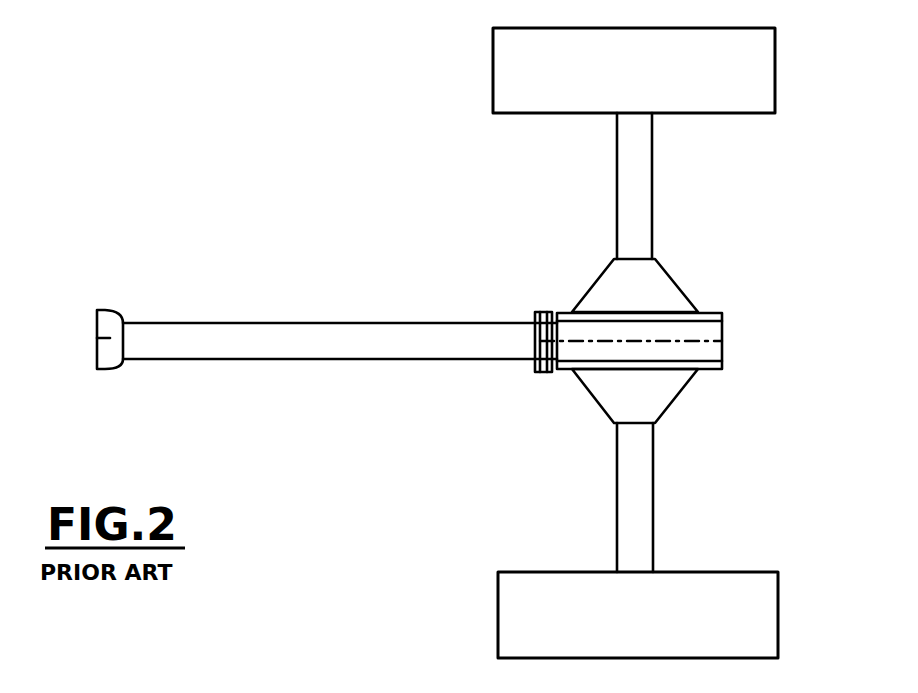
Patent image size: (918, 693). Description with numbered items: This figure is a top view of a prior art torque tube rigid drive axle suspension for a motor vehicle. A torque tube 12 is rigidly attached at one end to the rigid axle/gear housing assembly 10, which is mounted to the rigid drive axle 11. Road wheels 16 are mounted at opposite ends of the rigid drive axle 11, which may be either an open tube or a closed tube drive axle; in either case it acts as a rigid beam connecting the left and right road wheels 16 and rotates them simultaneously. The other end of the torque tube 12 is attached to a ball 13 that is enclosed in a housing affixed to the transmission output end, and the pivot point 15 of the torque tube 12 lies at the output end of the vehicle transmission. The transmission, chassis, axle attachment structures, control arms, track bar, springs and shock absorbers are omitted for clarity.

The rigid drive axle/gear housing assembly 10 is at (722, 340).
The rigid drive axle 11 is at (652, 180).
The torque tube 12 is at (335, 363).
The ball 13 is at (105, 312).
The pivot point 15 is at (97, 338).
The road wheels 16 is at (493, 63).